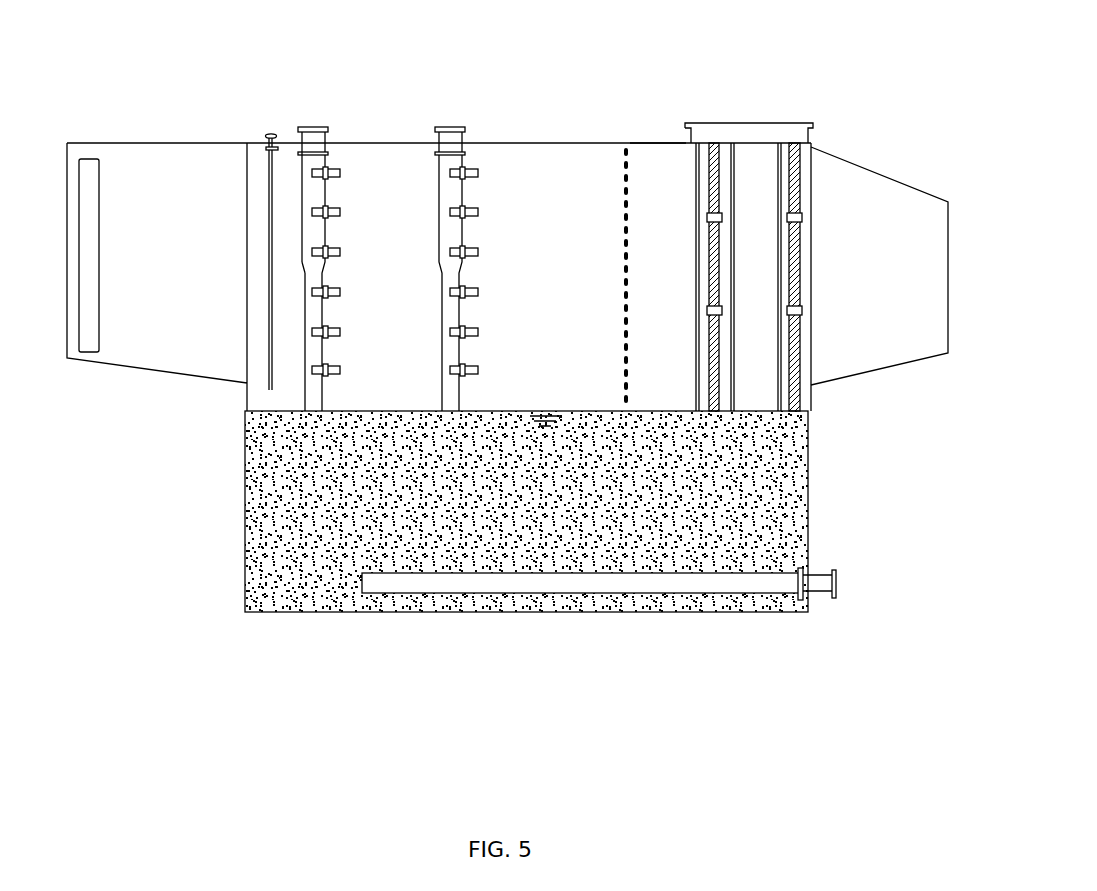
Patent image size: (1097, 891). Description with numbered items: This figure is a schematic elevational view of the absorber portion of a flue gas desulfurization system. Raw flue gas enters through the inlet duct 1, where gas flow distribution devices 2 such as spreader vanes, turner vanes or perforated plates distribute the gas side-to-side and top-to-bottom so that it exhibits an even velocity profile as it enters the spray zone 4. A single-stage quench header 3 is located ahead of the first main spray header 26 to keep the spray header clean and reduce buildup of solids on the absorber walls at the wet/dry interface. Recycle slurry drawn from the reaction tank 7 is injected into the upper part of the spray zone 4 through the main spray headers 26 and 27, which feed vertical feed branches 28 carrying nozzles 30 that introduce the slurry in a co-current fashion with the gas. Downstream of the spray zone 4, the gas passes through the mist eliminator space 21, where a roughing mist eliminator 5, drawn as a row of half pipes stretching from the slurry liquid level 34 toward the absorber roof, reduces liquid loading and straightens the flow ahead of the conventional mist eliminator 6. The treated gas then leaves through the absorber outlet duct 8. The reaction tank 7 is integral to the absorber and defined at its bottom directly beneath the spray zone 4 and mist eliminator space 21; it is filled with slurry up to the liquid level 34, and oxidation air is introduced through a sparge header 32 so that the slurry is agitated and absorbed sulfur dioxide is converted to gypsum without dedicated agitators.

The inlet duct 1 is at (152, 375).
The gas flow distribution devices 2 is at (82, 302).
The quench header 3 is at (265, 136).
The spray zone 4 is at (507, 193).
The roughing mist eliminator 5 is at (615, 140).
The conventional mist eliminator 6 is at (727, 140).
The reaction tank 7 is at (300, 592).
The absorber outlet duct 8 is at (838, 160).
The mist eliminator space 21 is at (661, 106).
The first main spray header 26 is at (283, 120).
The second main spray header 27 is at (433, 120).
The vertical feed branch 28 is at (302, 210).
The nozzle 30 is at (340, 294).
The sparge header 32 is at (742, 595).
The liquid level 34 is at (523, 413).